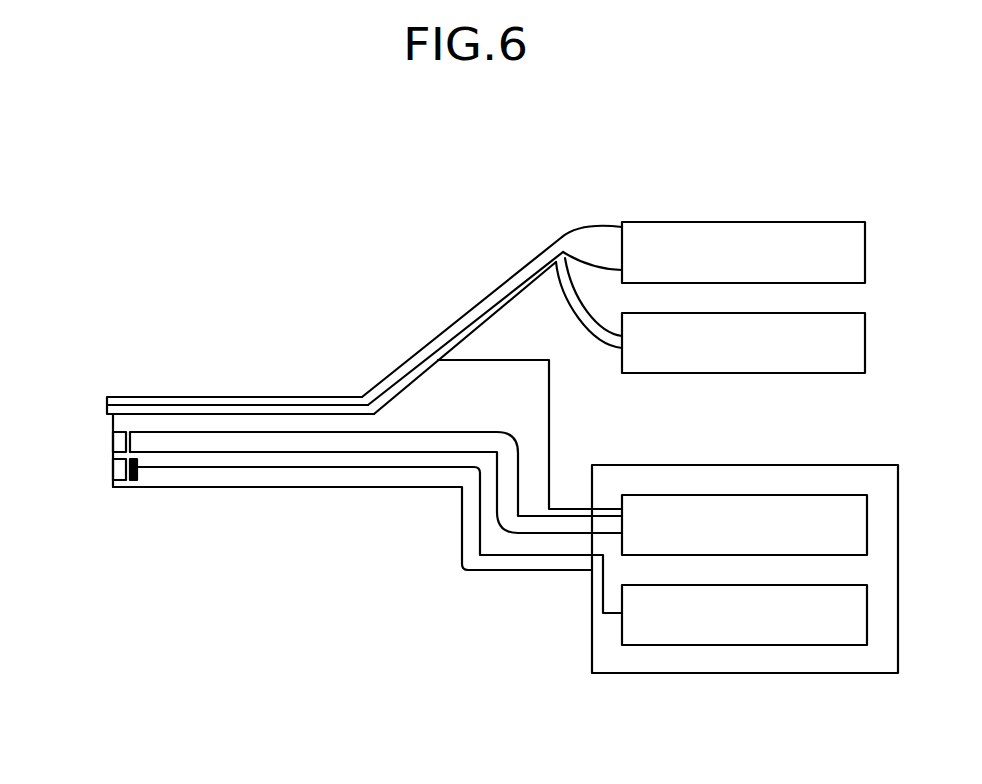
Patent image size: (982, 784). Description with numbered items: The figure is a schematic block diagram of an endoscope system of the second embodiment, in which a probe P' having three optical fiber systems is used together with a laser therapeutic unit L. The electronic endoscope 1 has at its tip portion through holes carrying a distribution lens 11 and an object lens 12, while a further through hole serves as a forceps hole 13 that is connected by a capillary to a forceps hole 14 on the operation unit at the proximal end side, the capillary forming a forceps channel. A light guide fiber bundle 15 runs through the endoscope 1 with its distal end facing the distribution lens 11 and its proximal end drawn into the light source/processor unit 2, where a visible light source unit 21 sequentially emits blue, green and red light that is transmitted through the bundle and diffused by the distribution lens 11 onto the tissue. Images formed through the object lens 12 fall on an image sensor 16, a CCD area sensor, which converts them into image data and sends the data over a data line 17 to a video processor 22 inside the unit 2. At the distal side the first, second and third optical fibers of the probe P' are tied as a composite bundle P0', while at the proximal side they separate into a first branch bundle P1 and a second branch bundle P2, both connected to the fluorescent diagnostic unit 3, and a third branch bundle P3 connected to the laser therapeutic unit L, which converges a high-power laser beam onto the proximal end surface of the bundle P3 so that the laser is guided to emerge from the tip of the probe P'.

The electronic endoscope 1 is at (218, 487).
The distribution lens 11 is at (113, 440).
The object lens 12 is at (113, 476).
The forceps hole 13 is at (108, 399).
The forceps hole 14 is at (321, 305).
The light guide fiber bundle 15 is at (521, 456).
The image sensor 16 is at (129, 481).
The data line 17 is at (345, 468).
The light source/processor unit 2 is at (745, 550).
The visible light source unit 21 is at (771, 495).
The video processor 22 is at (772, 645).
The fluorescent diagnostic unit 3 is at (770, 222).
The laser therapeutic unit L is at (683, 374).
The first branch bundle P1 is at (586, 229).
The second branch bundle P2 is at (578, 274).
The third branch bundle P3 is at (590, 343).
The composite bundle P0' is at (462, 317).
The probe P' is at (465, 301).